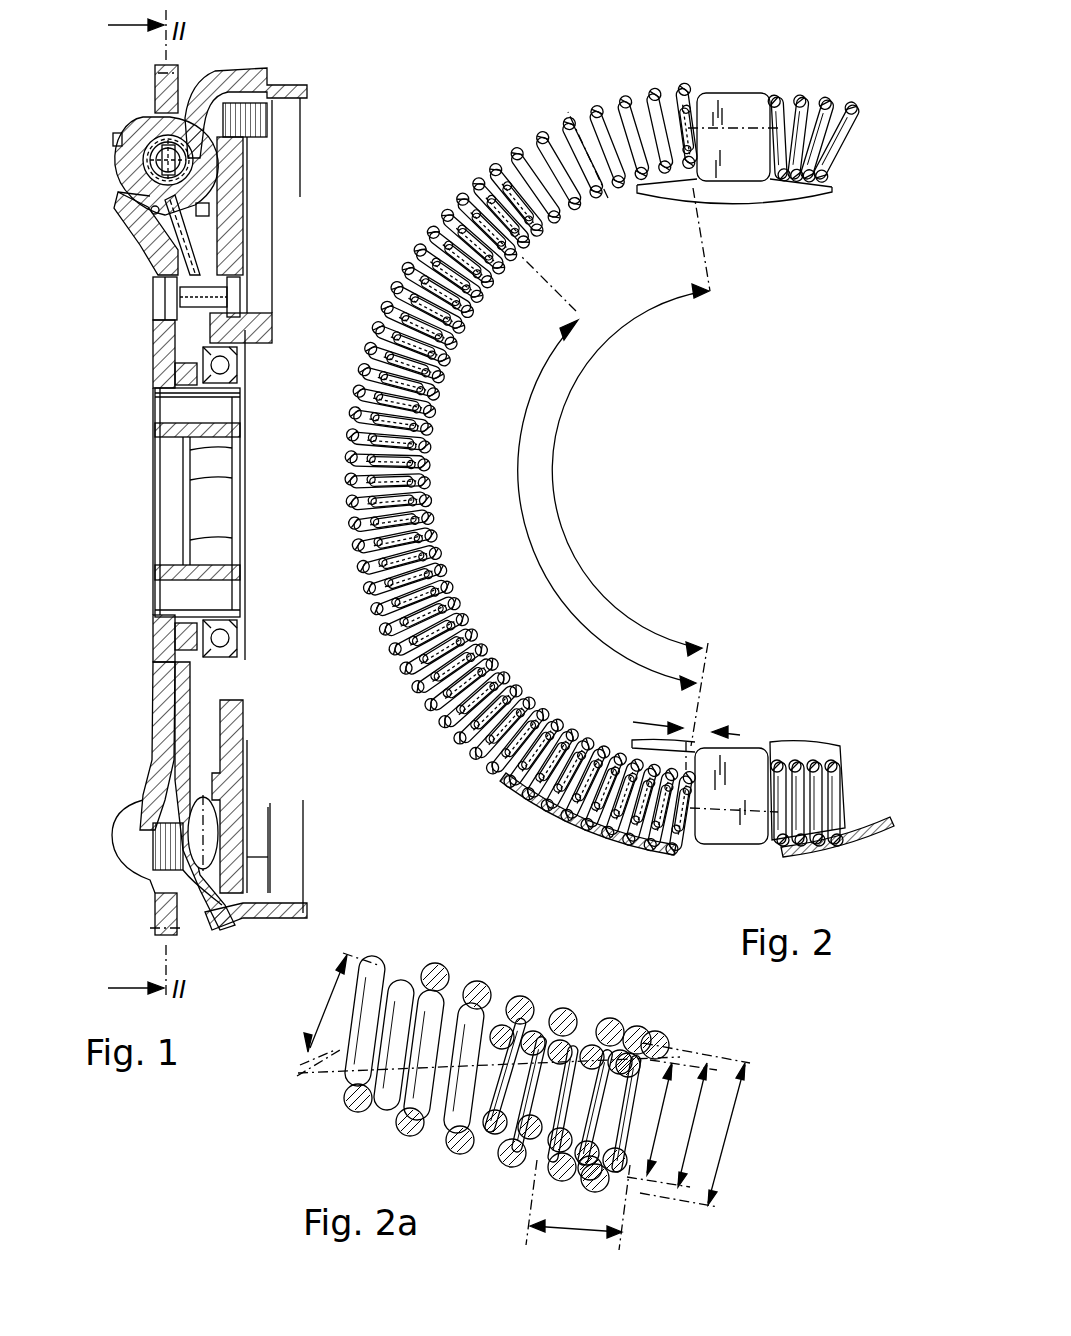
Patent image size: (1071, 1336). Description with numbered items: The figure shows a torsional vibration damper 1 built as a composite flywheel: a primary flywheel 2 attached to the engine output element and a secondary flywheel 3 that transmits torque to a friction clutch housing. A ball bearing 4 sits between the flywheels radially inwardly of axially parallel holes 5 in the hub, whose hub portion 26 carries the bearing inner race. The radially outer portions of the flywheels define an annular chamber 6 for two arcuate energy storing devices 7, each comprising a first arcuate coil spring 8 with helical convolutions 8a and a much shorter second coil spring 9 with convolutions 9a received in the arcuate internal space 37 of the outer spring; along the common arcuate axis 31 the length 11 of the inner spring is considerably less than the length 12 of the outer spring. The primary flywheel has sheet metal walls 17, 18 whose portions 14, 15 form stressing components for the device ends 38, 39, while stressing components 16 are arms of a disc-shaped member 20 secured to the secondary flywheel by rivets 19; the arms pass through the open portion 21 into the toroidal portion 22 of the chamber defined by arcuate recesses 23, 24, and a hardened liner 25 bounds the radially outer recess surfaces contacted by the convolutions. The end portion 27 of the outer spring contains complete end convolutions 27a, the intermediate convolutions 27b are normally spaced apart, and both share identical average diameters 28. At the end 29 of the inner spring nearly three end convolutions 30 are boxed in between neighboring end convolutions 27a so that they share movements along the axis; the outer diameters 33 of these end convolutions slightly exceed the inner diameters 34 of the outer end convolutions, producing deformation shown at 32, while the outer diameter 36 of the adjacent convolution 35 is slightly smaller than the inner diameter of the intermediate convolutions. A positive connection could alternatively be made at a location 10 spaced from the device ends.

In FIG. 1, the torsional vibration damper 1 is at (272, 66).
In FIG. 1, the primary flywheel 2 is at (160, 346).
In FIG. 1, the secondary flywheel 3 is at (232, 255).
In FIG. 1, the ball bearing 4 is at (225, 362).
In FIG. 1, the axially parallel holes 5 is at (165, 603).
In FIG. 1, the annular chamber 6 is at (125, 182).
In FIG. 1, the energy storing device 7 is at (150, 212).
In FIG. 2, the energy storing device 7 is at (812, 78).
In FIG. 1, the first arcuate coil spring 8 is at (140, 196).
In FIG. 2, the first arcuate coil spring 8 is at (508, 690).
In FIG. 2a, the first arcuate coil spring 8 is at (480, 990).
In FIG. 2, the helical convolutions 8a is at (470, 650).
In FIG. 1, the second arcuate coil spring 9 is at (170, 210).
In FIG. 2, the second arcuate coil spring 9 is at (358, 388).
In FIG. 2a, the second arcuate coil spring 9 is at (405, 1093).
In FIG. 2, the helical convolutions 9a is at (410, 280).
In FIG. 2, the location 10 is at (410, 500).
In FIG. 2, the length of the second spring 11 is at (540, 540).
In FIG. 2, the length of the first spring 12 is at (552, 490).
In FIG. 1, the stressing component portion 14 is at (135, 855).
In FIG. 1, the stressing component portion 15 is at (200, 835).
In FIG. 2, the stressing component portion 15 is at (695, 100).
In FIG. 1, the stressing component 16 is at (160, 835).
In FIG. 2, the stressing component 16 is at (745, 95).
In FIG. 1, the sheet metal wall 17 is at (165, 748).
In FIG. 1, the sheet metal wall 18 is at (218, 810).
In FIG. 1, the rivets 19 is at (215, 294).
In FIG. 1, the disc-shaped member 20 is at (195, 705).
In FIG. 1, the opening 21 is at (205, 212).
In FIG. 1, the toroidal portion 22 is at (214, 192).
In FIG. 1, the arcuate recess 23 is at (205, 150).
In FIG. 1, the arcuate recess 24 is at (135, 157).
In FIG. 1, the liner 25 is at (138, 125).
In FIG. 2, the liner 25 is at (580, 835).
In FIG. 1, the hub portion 26 is at (178, 440).
In FIG. 2, the end portion of the first coil spring 27 is at (680, 745).
In FIG. 2, the end convolutions 27a is at (662, 845).
In FIG. 2a, the end convolutions 27a is at (628, 1030).
In FIG. 2, the intermediate convolutions 27b is at (425, 420).
In FIG. 2a, the intermediate convolutions 27b is at (405, 1130).
In FIG. 2a, the average diameter 28 is at (720, 1155).
In FIG. 2a, the end of the inner coil spring 29 is at (570, 1232).
In FIG. 2a, the end convolution 30 is at (550, 1178).
In FIG. 2, the common arcuate axis 31 is at (581, 142).
In FIG. 2a, the common arcuate axis 31 is at (307, 1077).
In FIG. 2a, the deformation 32 is at (600, 1025).
In FIG. 2a, the outer diameter of the end convolutions 33 is at (700, 1128).
In FIG. 2a, the inner diameter of the end convolutions 34 is at (680, 1100).
In FIG. 2, the convolution 35 is at (432, 352).
In FIG. 2a, the convolution 35 is at (350, 1075).
In FIG. 2a, the outer diameter 36 is at (312, 1025).
In FIG. 2, the arcuate internal space 37 is at (525, 170).
In FIG. 2, the end of the energy storing device 38 is at (690, 800).
In FIG. 2, the end of the energy storing device 39 is at (700, 145).